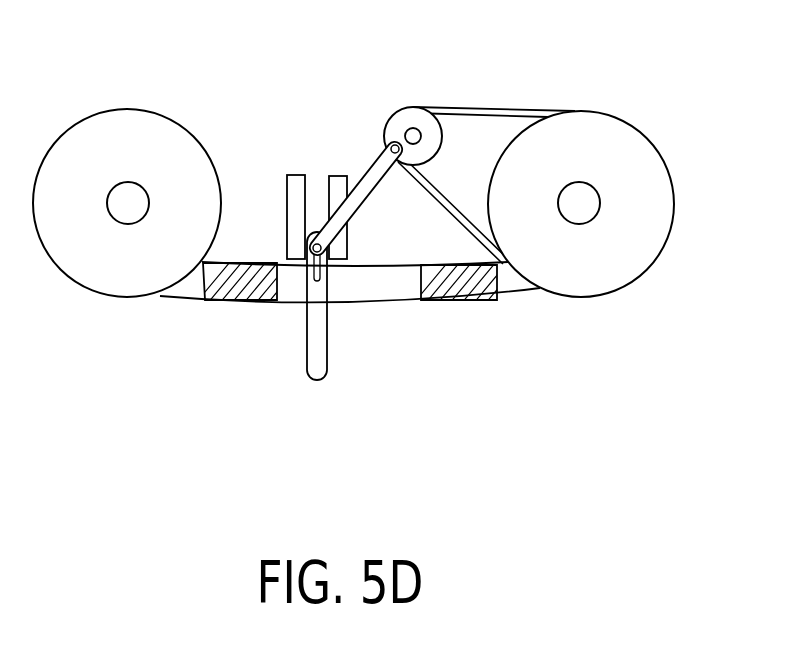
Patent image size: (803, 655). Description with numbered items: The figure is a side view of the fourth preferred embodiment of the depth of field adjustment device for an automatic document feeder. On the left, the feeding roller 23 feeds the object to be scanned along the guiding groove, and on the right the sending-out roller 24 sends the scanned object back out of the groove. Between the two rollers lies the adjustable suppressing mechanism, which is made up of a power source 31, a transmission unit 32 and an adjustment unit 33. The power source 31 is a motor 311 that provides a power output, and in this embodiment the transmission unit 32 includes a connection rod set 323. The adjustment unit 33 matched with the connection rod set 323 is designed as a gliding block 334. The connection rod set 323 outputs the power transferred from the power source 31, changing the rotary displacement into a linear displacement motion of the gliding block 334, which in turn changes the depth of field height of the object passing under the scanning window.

The feeding roller 23 is at (122, 132).
The sending-out roller 24 is at (605, 128).
The power source 31 is at (676, 270).
The motor 311 is at (597, 197).
The transmission unit 32 is at (340, 150).
The connection rod set 323 is at (376, 157).
The adjustment unit 33 is at (355, 336).
The gliding block 334 is at (310, 357).